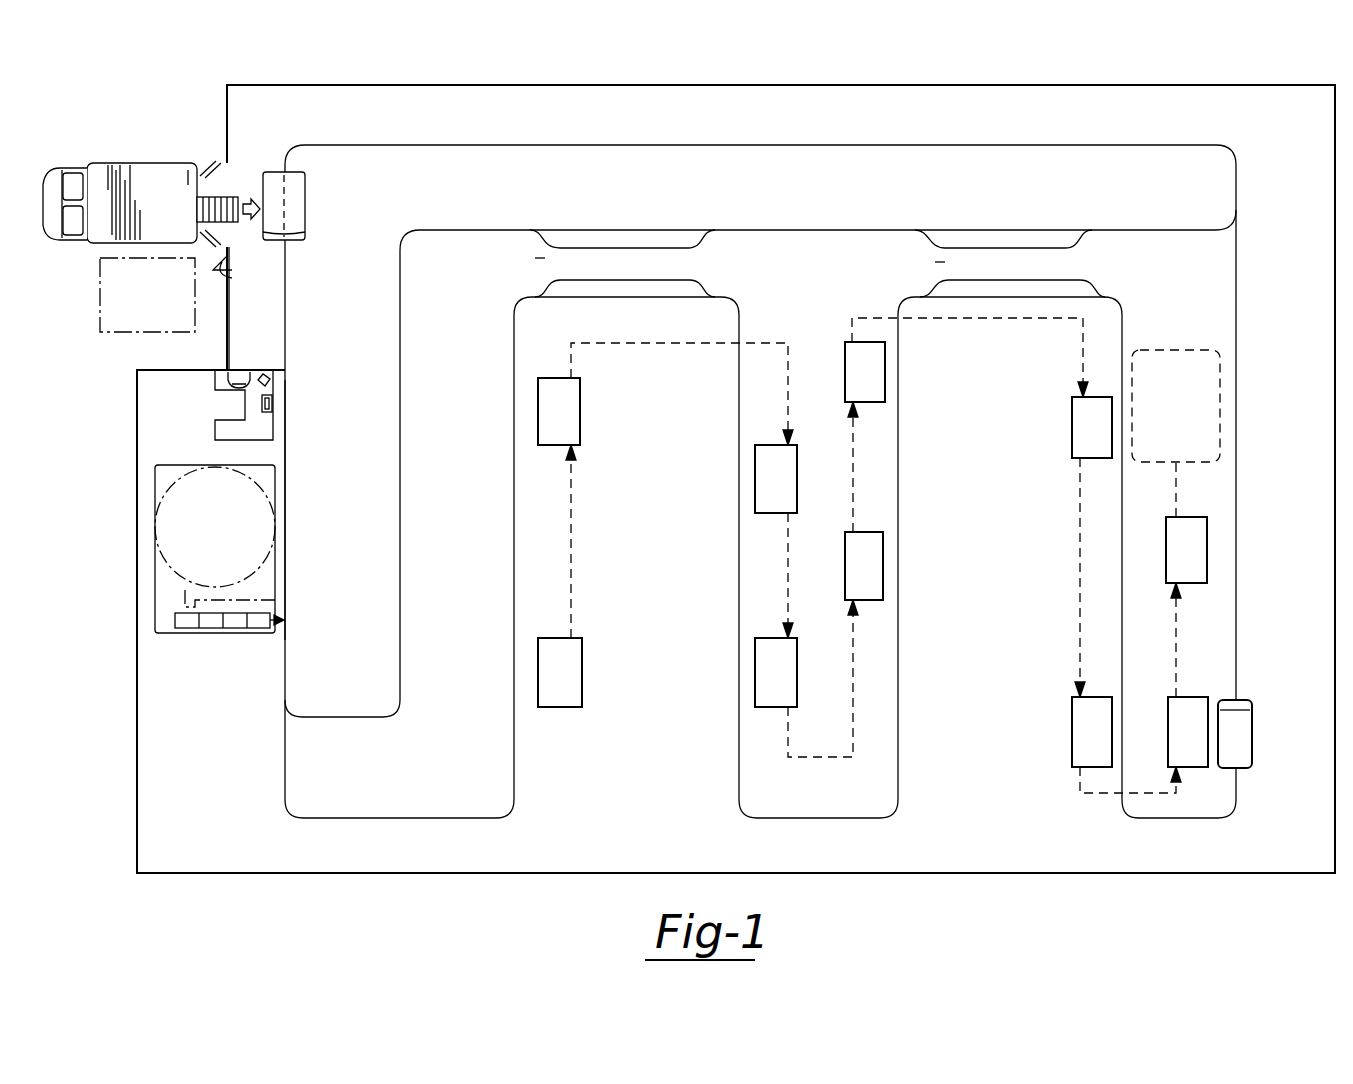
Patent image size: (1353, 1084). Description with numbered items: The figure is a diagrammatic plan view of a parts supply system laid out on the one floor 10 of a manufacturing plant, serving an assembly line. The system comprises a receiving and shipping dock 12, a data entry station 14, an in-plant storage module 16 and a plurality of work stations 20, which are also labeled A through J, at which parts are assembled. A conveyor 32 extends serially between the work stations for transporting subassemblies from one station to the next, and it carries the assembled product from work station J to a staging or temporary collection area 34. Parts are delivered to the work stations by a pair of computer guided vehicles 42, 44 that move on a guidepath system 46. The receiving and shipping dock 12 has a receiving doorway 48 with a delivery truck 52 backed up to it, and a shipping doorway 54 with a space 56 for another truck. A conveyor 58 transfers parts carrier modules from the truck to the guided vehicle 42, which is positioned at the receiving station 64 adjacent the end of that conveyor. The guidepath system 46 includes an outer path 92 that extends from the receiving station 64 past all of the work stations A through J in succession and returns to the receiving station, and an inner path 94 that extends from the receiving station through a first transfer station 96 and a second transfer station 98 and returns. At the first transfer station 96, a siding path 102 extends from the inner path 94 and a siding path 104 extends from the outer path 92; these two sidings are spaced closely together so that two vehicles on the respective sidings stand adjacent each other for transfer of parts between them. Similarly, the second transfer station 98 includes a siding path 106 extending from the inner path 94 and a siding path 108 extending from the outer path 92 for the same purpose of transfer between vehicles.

The floor 10 is at (420, 80).
The receiving and shipping dock 12 is at (149, 201).
The data entry station 14 is at (225, 404).
The in-plant storage module 16 is at (143, 578).
The work stations 20 is at (580, 410).
The conveyor 32 is at (571, 556).
The staging or temporary collection area 34 is at (1190, 350).
The computer guided vehicle 42 is at (318, 200).
The computer guided vehicle 44 is at (1302, 708).
The guidepath system 46 is at (298, 455).
The receiving doorway 48 is at (242, 274).
The delivery truck 52 is at (150, 163).
The shipping doorway 54 is at (229, 355).
The space 56 is at (128, 320).
The conveyor 58 is at (215, 197).
The receiving station 64 is at (258, 142).
The outer path 92 is at (470, 790).
The inner path 94 is at (846, 200).
The first transfer station 96 is at (530, 260).
The second transfer station 98 is at (930, 262).
The siding path 102 is at (690, 250).
The siding path 104 is at (680, 280).
The siding path 106 is at (1065, 250).
The siding path 108 is at (1060, 282).